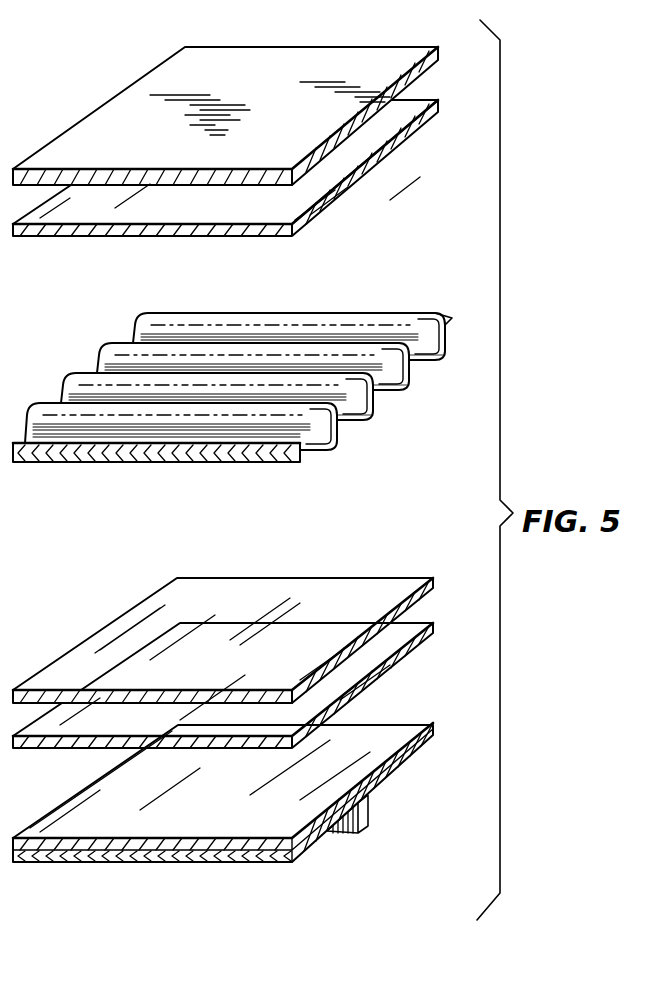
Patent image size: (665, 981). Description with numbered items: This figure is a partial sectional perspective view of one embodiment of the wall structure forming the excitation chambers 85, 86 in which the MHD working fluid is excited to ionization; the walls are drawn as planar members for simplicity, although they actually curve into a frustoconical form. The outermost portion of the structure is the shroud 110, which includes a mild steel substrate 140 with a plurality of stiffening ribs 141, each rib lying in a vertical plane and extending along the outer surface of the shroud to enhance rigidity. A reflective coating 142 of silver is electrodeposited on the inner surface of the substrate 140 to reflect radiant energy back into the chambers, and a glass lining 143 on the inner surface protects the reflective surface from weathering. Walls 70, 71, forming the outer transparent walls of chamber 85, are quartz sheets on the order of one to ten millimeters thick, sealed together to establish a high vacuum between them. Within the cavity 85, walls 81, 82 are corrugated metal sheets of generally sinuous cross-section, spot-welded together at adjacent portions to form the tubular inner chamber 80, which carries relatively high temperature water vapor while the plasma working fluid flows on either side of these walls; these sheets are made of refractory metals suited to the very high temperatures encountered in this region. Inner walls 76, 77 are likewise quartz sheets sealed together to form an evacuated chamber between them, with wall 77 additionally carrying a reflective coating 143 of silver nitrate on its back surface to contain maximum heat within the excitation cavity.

The inner wall 77 is at (431, 72).
The inner wall 76 is at (386, 152).
The glass lining 143 is at (334, 105).
The chamber 86 is at (248, 388).
The wall 82 is at (418, 313).
The wall 81 is at (435, 366).
The inner chamber 80 is at (428, 386).
The chamber 85 is at (249, 392).
The wall 71 is at (428, 578).
The wall 70 is at (433, 625).
The reflective coating 142 is at (433, 730).
The mild steel substrate 140 is at (253, 782).
The shroud 110 is at (253, 785).
The stiffening rib 141 is at (360, 833).